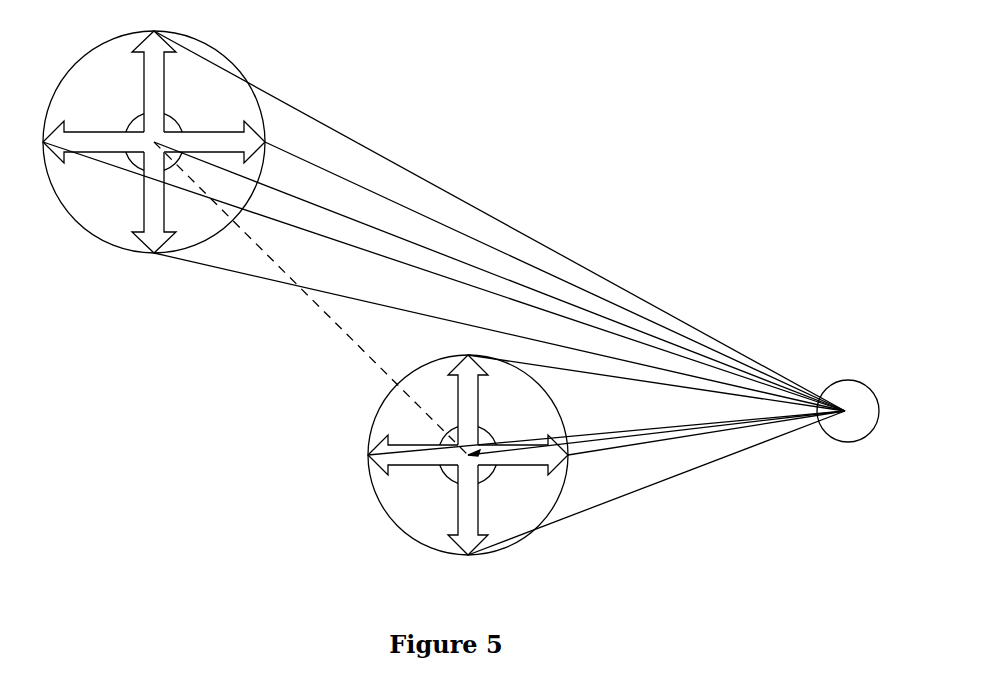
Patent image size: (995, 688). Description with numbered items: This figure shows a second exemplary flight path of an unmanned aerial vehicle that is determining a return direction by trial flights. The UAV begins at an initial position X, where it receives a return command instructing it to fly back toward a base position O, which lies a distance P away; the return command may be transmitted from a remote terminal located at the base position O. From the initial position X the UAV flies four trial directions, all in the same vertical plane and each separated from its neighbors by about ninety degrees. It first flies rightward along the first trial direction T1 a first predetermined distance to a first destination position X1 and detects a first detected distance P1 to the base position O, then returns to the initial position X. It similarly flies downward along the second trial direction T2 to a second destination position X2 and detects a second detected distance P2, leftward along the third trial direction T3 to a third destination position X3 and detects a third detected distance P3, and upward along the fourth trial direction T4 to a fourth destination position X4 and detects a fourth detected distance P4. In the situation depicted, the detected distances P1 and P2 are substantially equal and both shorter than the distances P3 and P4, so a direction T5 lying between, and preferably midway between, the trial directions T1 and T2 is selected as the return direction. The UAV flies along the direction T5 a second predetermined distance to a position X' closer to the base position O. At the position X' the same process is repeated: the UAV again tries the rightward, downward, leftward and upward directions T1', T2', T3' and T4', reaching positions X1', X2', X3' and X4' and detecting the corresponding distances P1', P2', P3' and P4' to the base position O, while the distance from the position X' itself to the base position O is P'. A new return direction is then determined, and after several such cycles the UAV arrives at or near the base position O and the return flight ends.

The initial position X is at (154, 142).
The first destination position X1 is at (277, 133).
The second destination position X2 is at (152, 266).
The third destination position X3 is at (27, 142).
The fourth destination position X4 is at (152, 18).
The first trial direction T1 is at (214, 142).
The second trial direction T2 is at (154, 202).
The third trial direction T3 is at (93, 142).
The fourth trial direction T4 is at (154, 81).
The return direction T5 is at (311, 298).
The distance P is at (499, 276).
The first detected distance P1 is at (555, 276).
The second detected distance P2 is at (499, 332).
The third detected distance P3 is at (444, 276).
The fourth detected distance P4 is at (499, 221).
The position closer to the base position X' is at (468, 455).
The point X1' is at (584, 470).
The point X2' is at (469, 568).
The point X3' is at (351, 456).
The point X4' is at (469, 343).
The tangent vector T4 at X' T4' is at (468, 400).
The tangent vector T2 at X' T2' is at (468, 510).
The tangent vector T3 at X' T3' is at (413, 455).
The tangent vector T1 at X' T1' is at (523, 455).
The projection line P' is at (656, 433).
The projection line P1' is at (706, 433).
The projection line P2' is at (656, 483).
The projection line P3' is at (606, 433).
The projection line P4' is at (656, 383).
The base position O is at (848, 423).